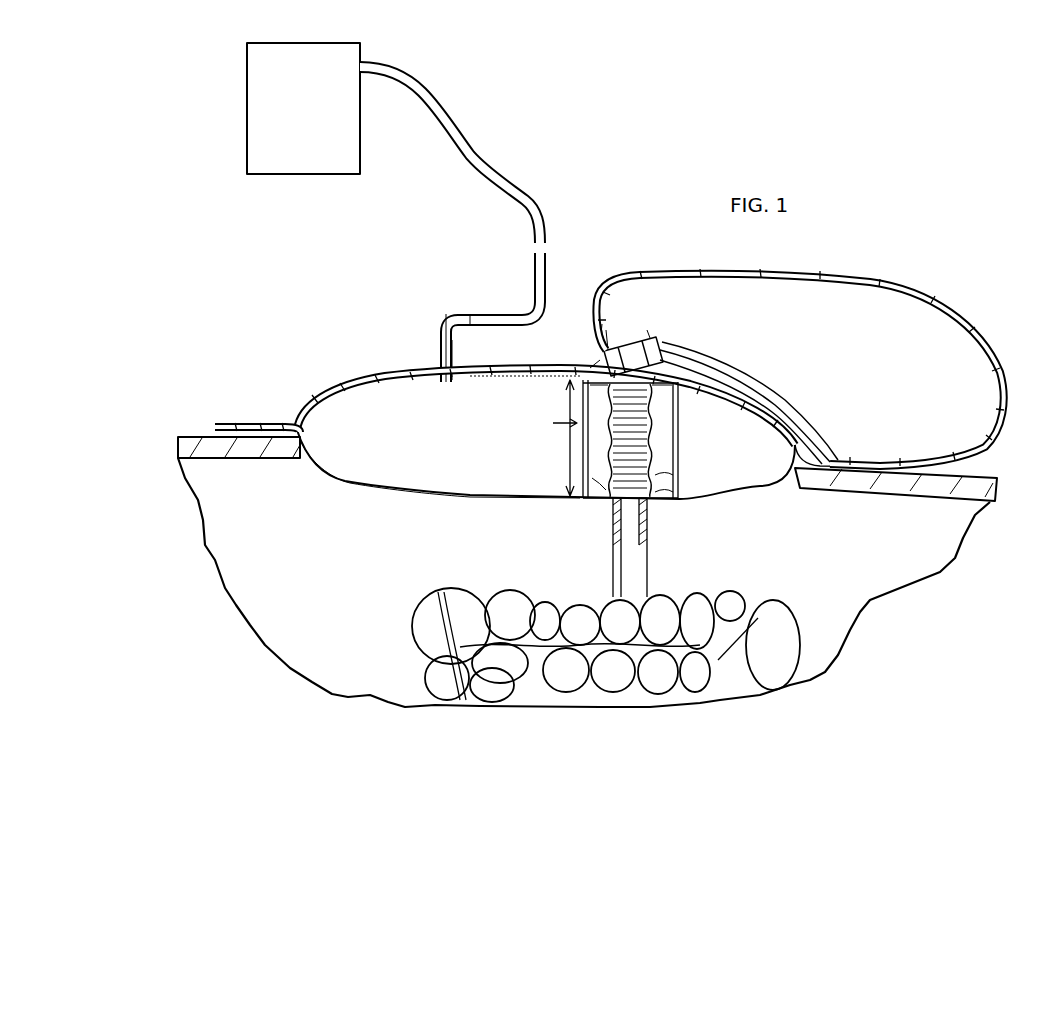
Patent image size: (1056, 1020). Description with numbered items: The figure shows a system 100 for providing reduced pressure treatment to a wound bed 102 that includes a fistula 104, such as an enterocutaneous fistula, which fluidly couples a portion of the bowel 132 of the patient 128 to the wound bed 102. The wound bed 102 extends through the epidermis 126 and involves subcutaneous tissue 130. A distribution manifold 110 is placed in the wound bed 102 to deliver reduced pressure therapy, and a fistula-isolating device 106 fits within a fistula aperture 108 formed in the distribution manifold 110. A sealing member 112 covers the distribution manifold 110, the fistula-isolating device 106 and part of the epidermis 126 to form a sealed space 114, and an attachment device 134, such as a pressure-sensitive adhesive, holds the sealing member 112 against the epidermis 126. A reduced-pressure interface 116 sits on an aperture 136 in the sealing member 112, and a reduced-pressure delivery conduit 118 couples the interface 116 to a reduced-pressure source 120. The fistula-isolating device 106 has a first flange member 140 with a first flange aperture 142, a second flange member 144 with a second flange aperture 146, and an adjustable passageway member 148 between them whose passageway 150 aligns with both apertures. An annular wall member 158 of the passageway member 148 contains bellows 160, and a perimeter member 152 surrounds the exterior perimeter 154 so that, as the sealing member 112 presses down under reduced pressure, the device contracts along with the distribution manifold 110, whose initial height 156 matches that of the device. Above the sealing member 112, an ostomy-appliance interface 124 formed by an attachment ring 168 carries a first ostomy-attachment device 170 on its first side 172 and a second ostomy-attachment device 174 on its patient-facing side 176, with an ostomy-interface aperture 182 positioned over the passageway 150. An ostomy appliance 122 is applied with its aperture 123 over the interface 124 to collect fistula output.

The system 100 is at (293, 293).
The wound bed 102 is at (347, 483).
The fistula 104 is at (612, 564).
The fistula-isolating device 106 is at (553, 422).
The fistula aperture 108 is at (580, 371).
The distribution manifold 110 is at (546, 460).
The sealing member 112 is at (310, 392).
The sealed space 114 is at (314, 458).
The reduced-pressure interface 116 is at (490, 314).
The reduced-pressure delivery conduit 118 is at (483, 168).
The reduced-pressure source 120 is at (247, 107).
The ostomy appliance 122 is at (872, 280).
The aperture of the ostomy appliance 123 is at (606, 328).
The ostomy-appliance interface 124 is at (632, 348).
The epidermis 126 is at (178, 445).
The patient 128 is at (960, 545).
The subcutaneous tissue 130 is at (202, 524).
The bowel 132 is at (766, 606).
The attachment device 134 is at (218, 429).
The aperture 136 is at (440, 352).
The first flange member 140 is at (722, 410).
The first flange aperture 142 is at (570, 398).
The second flange member 144 is at (677, 489).
The second flange aperture 146 is at (658, 500).
The adjustable passageway member 148 is at (600, 470).
The passageway 150 is at (664, 408).
The perimeter member 152 is at (666, 433).
The exterior perimeter 154 is at (596, 457).
The initial height 156 is at (586, 438).
The annular wall member 158 is at (600, 499).
The bellows 160 is at (674, 453).
The attachment ring 168 is at (688, 362).
The first ostomy-attachment device 170 is at (606, 344).
The first side 172 is at (662, 358).
The second ostomy-attachment device 174 is at (594, 364).
The second, patient-facing side 176 is at (680, 386).
The ostomy-interface aperture 182 is at (650, 336).